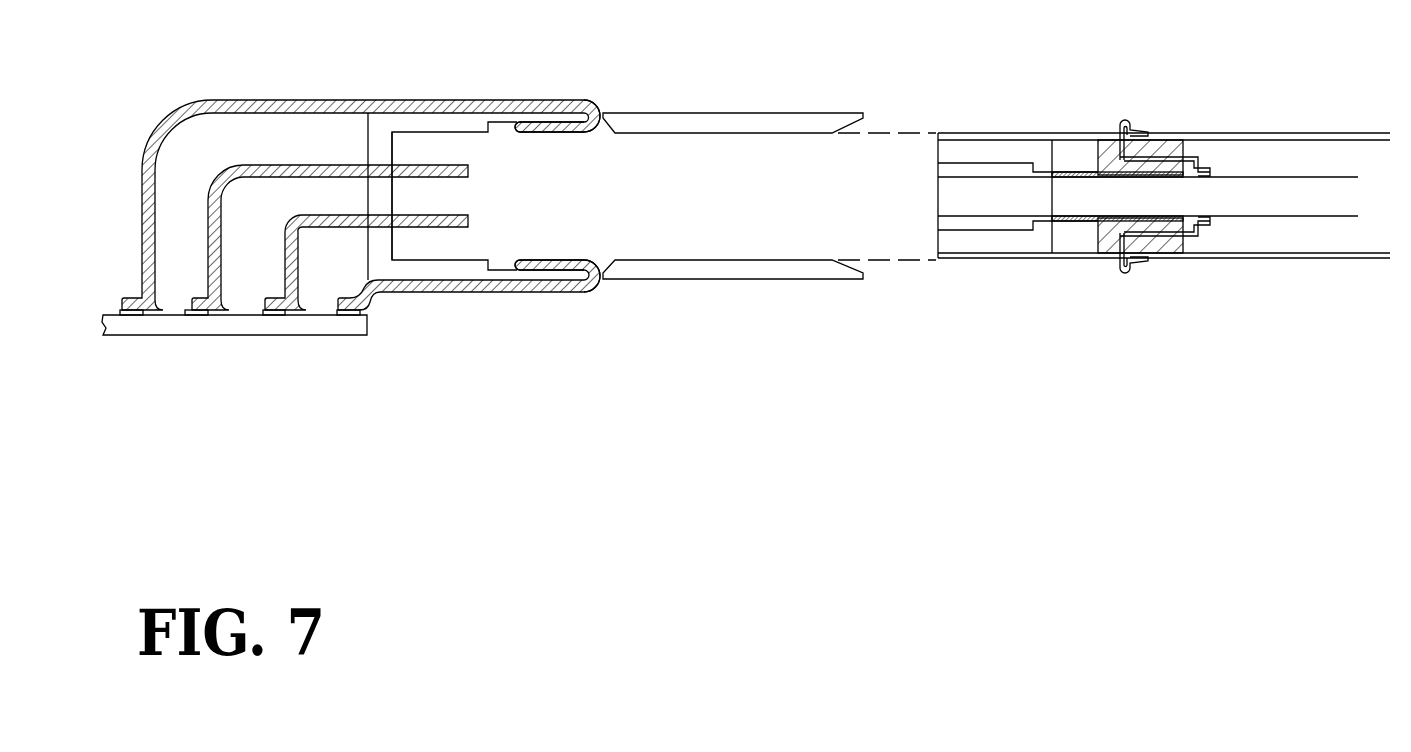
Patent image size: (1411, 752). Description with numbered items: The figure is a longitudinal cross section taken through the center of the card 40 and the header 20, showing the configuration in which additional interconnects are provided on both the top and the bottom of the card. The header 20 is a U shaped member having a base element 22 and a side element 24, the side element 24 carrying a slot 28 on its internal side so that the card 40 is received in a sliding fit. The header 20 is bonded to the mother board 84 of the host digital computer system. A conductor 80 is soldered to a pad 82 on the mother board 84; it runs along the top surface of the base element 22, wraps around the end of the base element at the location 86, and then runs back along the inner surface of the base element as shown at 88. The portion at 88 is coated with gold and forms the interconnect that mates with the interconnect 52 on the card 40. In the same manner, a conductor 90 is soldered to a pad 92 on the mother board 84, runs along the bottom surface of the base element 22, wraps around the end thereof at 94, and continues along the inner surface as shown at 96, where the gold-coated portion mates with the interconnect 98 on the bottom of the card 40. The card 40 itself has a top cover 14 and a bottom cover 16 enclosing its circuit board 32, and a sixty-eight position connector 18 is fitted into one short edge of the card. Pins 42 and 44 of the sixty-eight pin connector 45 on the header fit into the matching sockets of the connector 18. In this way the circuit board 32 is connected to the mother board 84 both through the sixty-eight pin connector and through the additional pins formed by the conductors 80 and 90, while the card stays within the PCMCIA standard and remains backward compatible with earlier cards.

The top cover 14 is at (985, 133).
The bottom cover 16 is at (1330, 258).
The 68 position connector 18 is at (1000, 248).
The header 20 is at (567, 370).
The base element 22 is at (406, 124).
The side element 24 is at (708, 113).
The slot 28 is at (745, 207).
The circuit board 32 is at (1348, 197).
The card 40 is at (1287, 282).
The pin 42 is at (455, 160).
The pin 44 is at (447, 229).
The 68 pin connector 45 is at (368, 128).
The interconnect 52 is at (1137, 122).
The conductor 80 is at (178, 108).
The pad 82 is at (120, 310).
The mother board 84 is at (205, 336).
The wrapped end of conductor 86 is at (596, 99).
The gold-coated interconnect portion 88 is at (579, 133).
The conductor 90 is at (548, 293).
The pad 92 is at (362, 314).
The wrapped end of conductor 94 is at (608, 290).
The gold-coated interconnect portion 96 is at (578, 260).
The interconnect 98 is at (1130, 272).